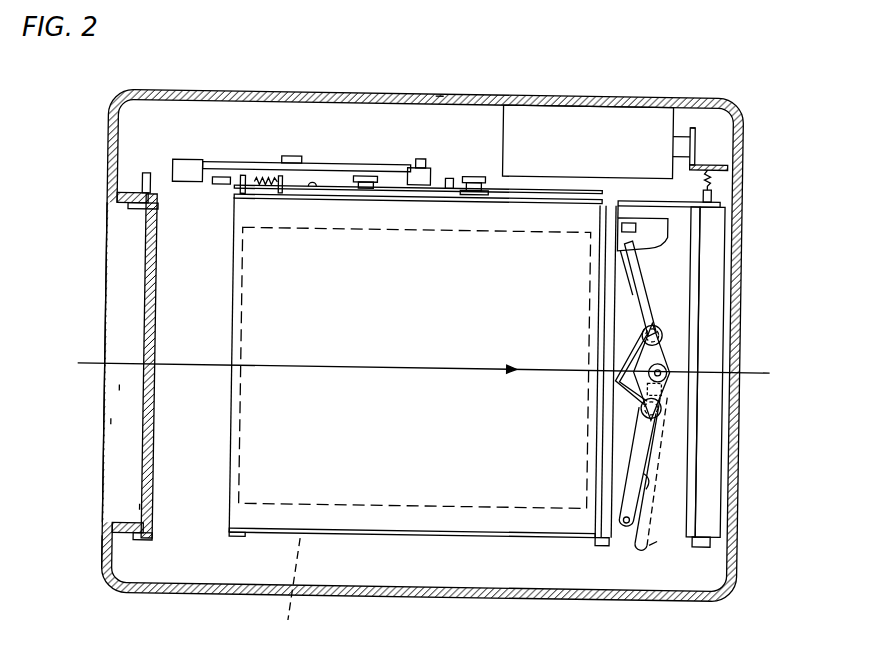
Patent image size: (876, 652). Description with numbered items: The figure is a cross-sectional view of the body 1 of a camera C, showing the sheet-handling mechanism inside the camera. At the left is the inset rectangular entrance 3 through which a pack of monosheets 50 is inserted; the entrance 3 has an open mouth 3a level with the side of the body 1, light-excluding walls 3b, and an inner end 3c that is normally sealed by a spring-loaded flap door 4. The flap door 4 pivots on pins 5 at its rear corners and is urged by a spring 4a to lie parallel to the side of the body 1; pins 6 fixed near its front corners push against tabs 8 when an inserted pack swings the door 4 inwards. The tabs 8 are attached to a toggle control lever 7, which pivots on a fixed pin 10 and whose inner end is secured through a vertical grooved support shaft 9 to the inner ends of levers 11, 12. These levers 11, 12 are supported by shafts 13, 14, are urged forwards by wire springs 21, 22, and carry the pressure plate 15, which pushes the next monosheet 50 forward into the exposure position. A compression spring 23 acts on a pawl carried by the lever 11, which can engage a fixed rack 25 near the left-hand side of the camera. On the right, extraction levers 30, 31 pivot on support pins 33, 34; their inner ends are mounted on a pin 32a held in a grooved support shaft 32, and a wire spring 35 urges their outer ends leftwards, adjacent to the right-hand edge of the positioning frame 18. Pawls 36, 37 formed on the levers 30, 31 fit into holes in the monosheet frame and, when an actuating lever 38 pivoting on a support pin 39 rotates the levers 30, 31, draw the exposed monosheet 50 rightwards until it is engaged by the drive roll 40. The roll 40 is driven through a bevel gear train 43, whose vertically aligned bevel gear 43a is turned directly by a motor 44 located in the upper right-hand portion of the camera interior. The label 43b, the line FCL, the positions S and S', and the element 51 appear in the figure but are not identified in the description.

The body 1 is at (316, 94).
The camera C is at (433, 95).
The entrance 3 is at (126, 463).
The open mouth 3a is at (112, 426).
The walls 3b is at (120, 392).
The inner end 3c is at (142, 511).
The flap door 4 is at (148, 281).
The spring 4a is at (128, 552).
The pins 5 is at (140, 209).
The pins 6 is at (140, 186).
The focal center line FCL is at (117, 368).
The position S is at (499, 386).
The position S prime S' is at (664, 547).
The toggle control lever 7 is at (233, 166).
The tabs 8 is at (170, 182).
The support shaft 9 is at (416, 159).
The fixed pin 10 is at (288, 158).
The lever 11 is at (393, 188).
The lever 12 is at (446, 178).
The shaft 13 is at (355, 178).
The shaft 14 is at (474, 176).
The pressure plate 15 is at (362, 537).
The positioning frame 18 is at (285, 593).
The wire spring 21 is at (309, 190).
The wire spring 22 is at (512, 197).
The compression spring 23 is at (258, 192).
The fixed rack 25 is at (212, 195).
The lever 30 is at (632, 289).
The lever 31 is at (631, 459).
The support shaft 32 is at (669, 369).
The pin 32a is at (670, 375).
The support pin 33 is at (663, 332).
The support pin 34 is at (663, 407).
The wire spring 35 is at (628, 357).
The pawl 36 is at (620, 226).
The pawl 37 is at (610, 537).
The actuating lever 38 is at (637, 542).
The support pin 39 is at (650, 477).
The roll 40 is at (724, 236).
The bevel gear train 43 is at (692, 140).
The bevel gear 43a is at (690, 124).
The bracket foot 43b is at (724, 164).
The motor 44 is at (588, 142).
The monosheets 50 is at (668, 220).
The lever 51 is at (636, 262).